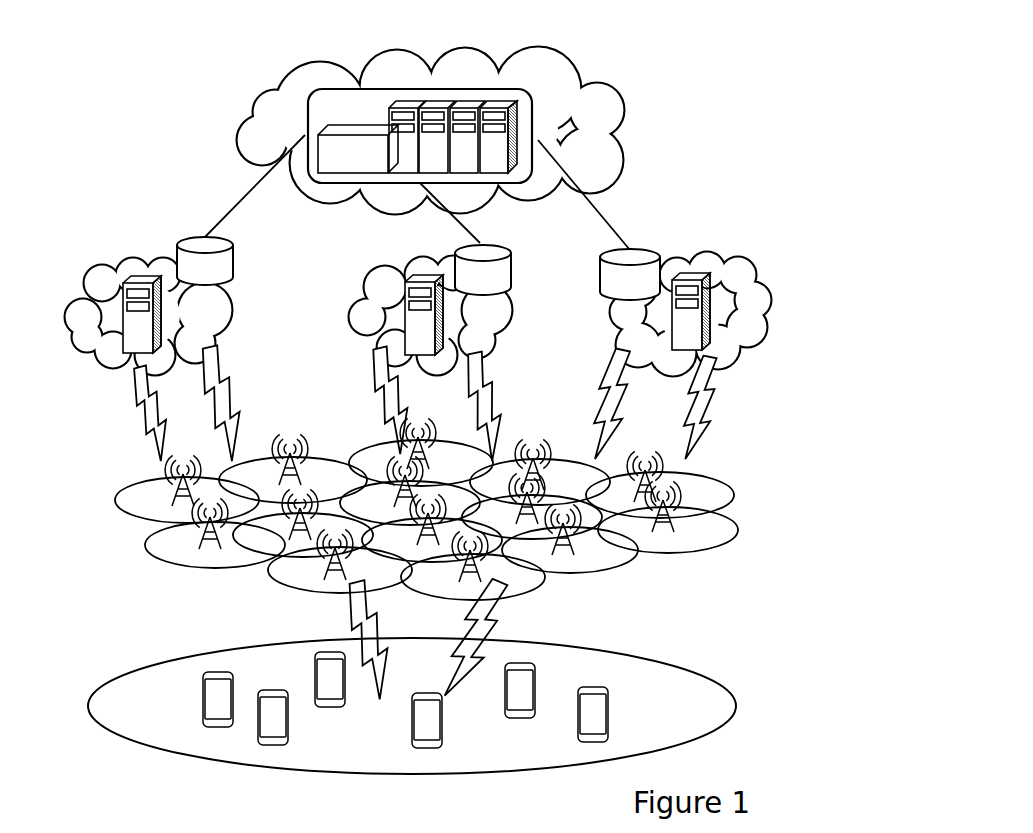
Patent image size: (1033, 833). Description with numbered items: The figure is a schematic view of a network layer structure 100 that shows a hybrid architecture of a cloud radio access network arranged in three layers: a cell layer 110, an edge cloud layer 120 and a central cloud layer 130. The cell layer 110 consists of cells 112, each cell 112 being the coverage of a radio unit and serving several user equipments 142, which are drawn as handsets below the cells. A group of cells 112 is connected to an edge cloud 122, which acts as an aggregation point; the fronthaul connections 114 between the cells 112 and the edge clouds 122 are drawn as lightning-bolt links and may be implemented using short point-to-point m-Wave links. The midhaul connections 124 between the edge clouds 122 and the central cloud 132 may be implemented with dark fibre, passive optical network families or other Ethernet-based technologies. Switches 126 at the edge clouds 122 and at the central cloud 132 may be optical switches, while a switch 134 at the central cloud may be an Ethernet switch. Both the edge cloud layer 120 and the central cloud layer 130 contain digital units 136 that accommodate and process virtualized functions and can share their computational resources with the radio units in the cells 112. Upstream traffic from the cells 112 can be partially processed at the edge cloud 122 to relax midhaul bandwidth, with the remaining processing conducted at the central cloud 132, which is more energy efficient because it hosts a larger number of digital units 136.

The network layer structure 100 is at (140, 88).
The cell layer 110 is at (440, 532).
The cell 112 is at (133, 518).
The fronthaul connection 114 is at (224, 392).
The edge cloud layer 120 is at (456, 300).
The edge cloud 122 is at (230, 328).
The midhaul connection 124 is at (226, 213).
The switch 126 is at (305, 107).
The central cloud layer 130 is at (542, 116).
The central cloud 132 is at (607, 82).
The switch 134 is at (365, 125).
The digital unit 136 is at (470, 97).
The user equipment 142 is at (262, 741).